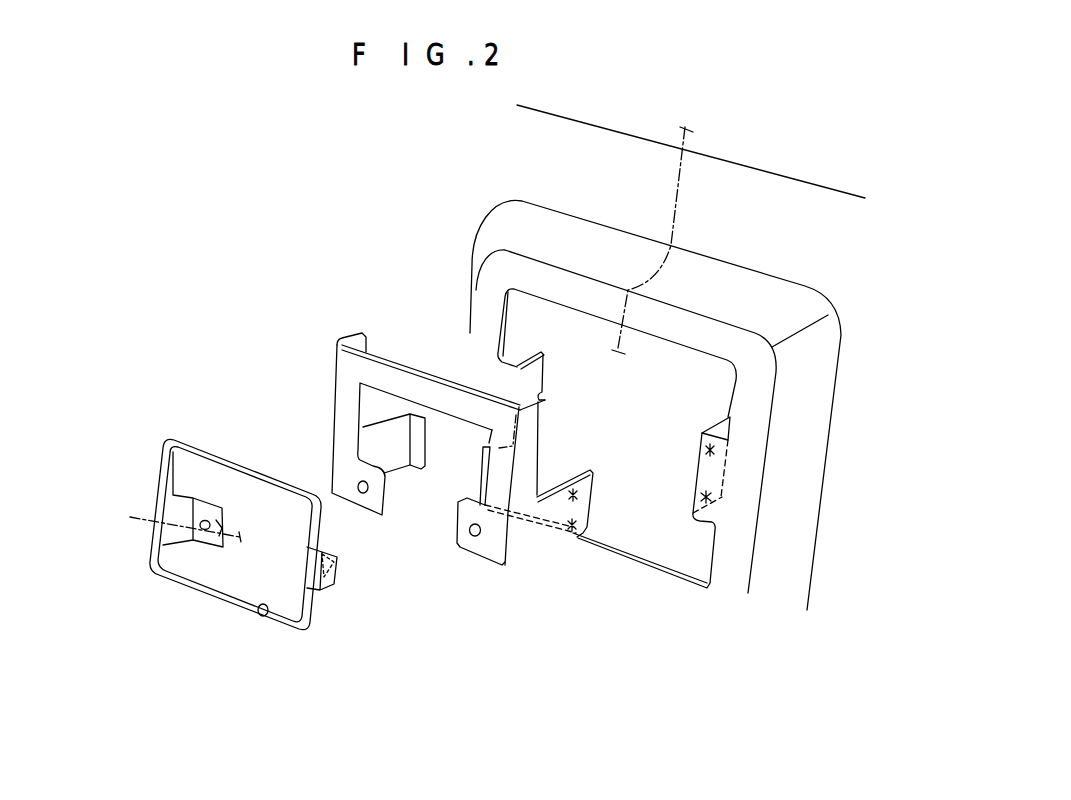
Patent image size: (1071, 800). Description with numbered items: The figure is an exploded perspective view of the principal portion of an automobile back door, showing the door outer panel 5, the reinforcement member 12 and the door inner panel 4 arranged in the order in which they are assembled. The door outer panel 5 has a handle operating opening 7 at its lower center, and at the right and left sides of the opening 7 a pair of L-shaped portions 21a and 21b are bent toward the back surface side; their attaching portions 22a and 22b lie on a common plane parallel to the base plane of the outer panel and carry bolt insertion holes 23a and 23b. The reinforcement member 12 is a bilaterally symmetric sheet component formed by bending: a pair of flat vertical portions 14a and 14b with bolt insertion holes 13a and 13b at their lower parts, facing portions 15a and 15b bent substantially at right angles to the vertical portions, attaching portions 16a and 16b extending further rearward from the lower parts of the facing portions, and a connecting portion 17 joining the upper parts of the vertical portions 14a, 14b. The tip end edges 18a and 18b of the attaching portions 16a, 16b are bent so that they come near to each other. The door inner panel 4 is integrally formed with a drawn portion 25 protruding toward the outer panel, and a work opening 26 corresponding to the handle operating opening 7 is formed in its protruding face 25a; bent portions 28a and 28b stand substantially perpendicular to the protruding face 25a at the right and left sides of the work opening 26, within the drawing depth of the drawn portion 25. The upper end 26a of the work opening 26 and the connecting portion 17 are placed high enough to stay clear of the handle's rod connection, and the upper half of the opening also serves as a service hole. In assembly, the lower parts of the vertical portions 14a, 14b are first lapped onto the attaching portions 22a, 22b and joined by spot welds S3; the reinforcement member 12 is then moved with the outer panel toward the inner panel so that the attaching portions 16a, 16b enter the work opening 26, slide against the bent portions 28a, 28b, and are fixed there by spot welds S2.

The door inner panel 4 is at (768, 197).
The work opening 26 is at (553, 323).
The upper end of the work opening 26a is at (680, 325).
The drawn portion 25 is at (738, 300).
The protruding face 25a is at (752, 432).
The bent portion 28a is at (527, 370).
The bent portion 28b is at (715, 470).
The spot welds S2 is at (722, 497).
The reinforcement member 12 is at (340, 372).
The vertical portion 14a is at (343, 403).
The vertical portion 14b is at (500, 477).
The facing portion 15a is at (355, 335).
The facing portion 15b is at (530, 440).
The attaching portion 16a is at (390, 440).
The attaching portion 16b is at (547, 507).
The connecting portion 17 is at (435, 390).
The tip end edge 18a is at (426, 455).
The tip end edge 18b is at (590, 504).
The bolt insertion hole 13a is at (362, 492).
The bolt insertion hole 13b is at (476, 545).
The door outer panel 5 is at (132, 548).
The handle operating opening 7 is at (264, 616).
The L-shaped portion 21a is at (180, 519).
The L-shaped portion 21b is at (323, 590).
The attaching portion 22a is at (207, 512).
The attaching portion 22b is at (328, 530).
The bolt insertion hole 23a is at (217, 532).
The bolt insertion hole 23b is at (313, 581).
The spot welds S3 is at (216, 527).